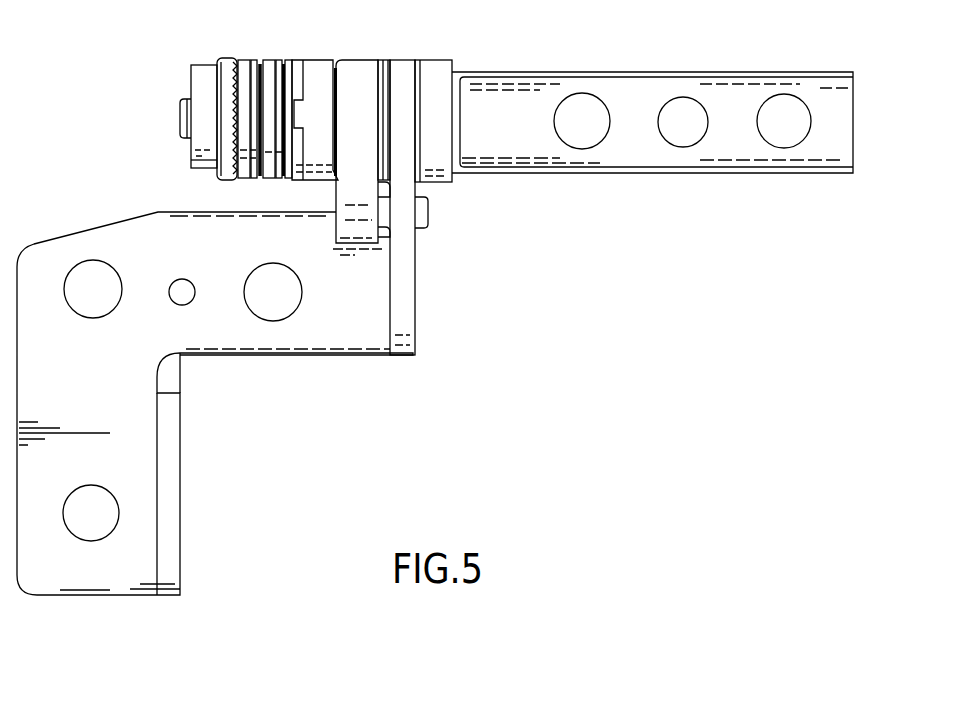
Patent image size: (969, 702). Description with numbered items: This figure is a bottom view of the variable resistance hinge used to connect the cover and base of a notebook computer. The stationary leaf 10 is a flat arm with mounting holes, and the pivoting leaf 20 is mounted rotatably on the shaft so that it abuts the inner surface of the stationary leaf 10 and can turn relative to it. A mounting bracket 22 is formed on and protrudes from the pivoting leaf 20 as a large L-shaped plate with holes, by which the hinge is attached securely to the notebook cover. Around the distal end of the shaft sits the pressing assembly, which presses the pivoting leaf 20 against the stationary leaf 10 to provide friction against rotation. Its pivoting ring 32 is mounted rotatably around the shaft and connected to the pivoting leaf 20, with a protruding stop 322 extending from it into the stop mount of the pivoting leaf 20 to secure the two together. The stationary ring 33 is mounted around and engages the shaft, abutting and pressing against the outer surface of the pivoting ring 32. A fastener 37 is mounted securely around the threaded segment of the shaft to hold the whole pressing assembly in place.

The stationary leaf 10 is at (627, 87).
The pivoting leaf 20 is at (405, 70).
The mounting bracket 22 is at (337, 343).
The pivoting ring 32 is at (358, 67).
The protruding stop 322 is at (420, 213).
The stationary ring 33 is at (318, 65).
The fastener 37 is at (205, 78).